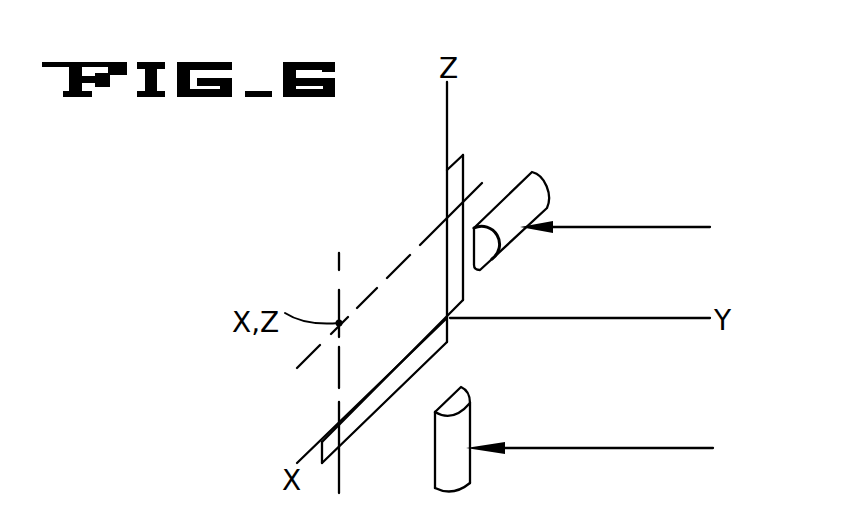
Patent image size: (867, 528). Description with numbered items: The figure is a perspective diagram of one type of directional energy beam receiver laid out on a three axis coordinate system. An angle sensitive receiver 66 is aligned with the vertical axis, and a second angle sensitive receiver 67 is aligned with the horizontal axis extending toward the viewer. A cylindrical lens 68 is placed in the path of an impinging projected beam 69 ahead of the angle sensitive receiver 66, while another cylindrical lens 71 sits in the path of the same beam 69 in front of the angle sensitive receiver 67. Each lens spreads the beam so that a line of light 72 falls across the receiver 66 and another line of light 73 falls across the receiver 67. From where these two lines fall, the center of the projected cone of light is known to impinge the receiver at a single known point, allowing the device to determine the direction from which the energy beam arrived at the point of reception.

The angle sensitive receiver 66 is at (463, 164).
The angle sensitive receiver 67 is at (421, 367).
The cylindrical lens 68 is at (550, 192).
The projected beam 69 is at (632, 227).
The cylindrical lens 71 is at (470, 418).
The line of light 72 is at (440, 223).
The line of light 73 is at (341, 463).